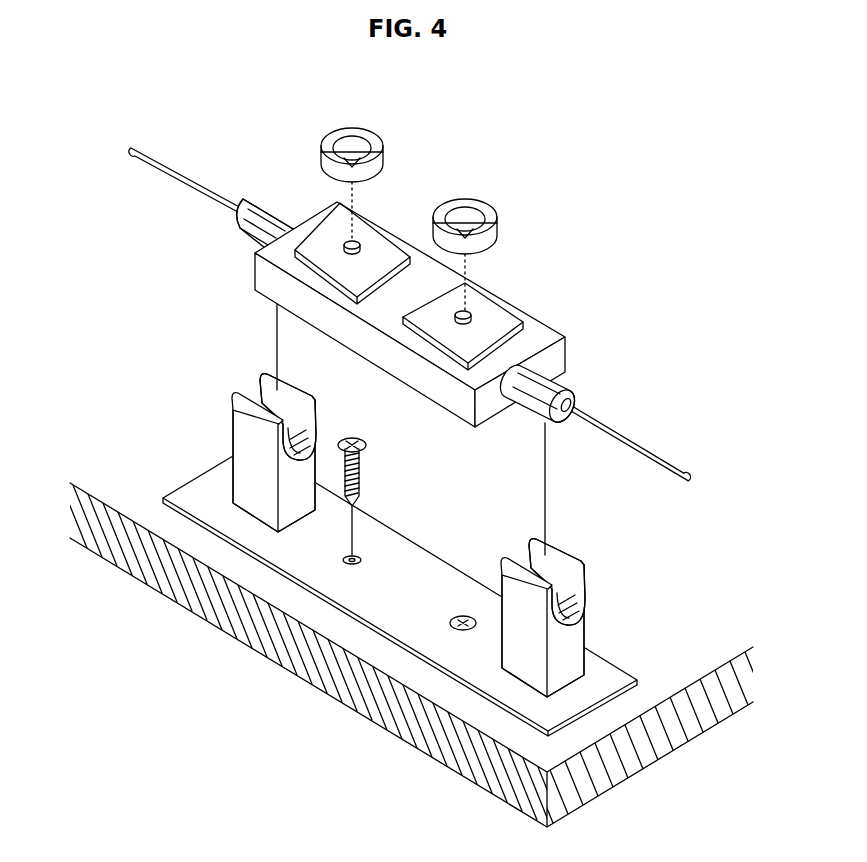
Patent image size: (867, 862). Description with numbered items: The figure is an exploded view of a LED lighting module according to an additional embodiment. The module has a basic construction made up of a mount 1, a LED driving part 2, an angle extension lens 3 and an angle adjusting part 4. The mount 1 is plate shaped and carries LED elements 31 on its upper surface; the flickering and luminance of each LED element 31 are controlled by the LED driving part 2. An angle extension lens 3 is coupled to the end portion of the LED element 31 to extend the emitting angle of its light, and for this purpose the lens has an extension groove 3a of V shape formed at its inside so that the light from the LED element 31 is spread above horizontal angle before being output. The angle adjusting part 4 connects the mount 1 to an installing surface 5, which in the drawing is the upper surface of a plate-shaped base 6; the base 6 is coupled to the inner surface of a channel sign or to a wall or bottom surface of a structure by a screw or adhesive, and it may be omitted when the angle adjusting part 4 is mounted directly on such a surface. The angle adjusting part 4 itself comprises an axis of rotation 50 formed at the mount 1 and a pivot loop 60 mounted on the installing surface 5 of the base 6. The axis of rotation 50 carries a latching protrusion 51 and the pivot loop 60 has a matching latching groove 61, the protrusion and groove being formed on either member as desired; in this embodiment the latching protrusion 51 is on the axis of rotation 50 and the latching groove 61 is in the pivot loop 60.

The mount 1 is at (540, 321).
The LED driving part 2 is at (375, 240).
The angle extension lens 3 is at (397, 200).
The extension groove 3a is at (345, 143).
The LED element 31 is at (348, 240).
The angle adjusting part 4 is at (488, 487).
The installing surface 5 is at (422, 575).
The base 6 is at (163, 498).
The axis of rotation 50 is at (565, 380).
The latching protrusion 51 is at (268, 225).
The pivot loop 60 is at (548, 618).
The latching groove 61 is at (590, 607).